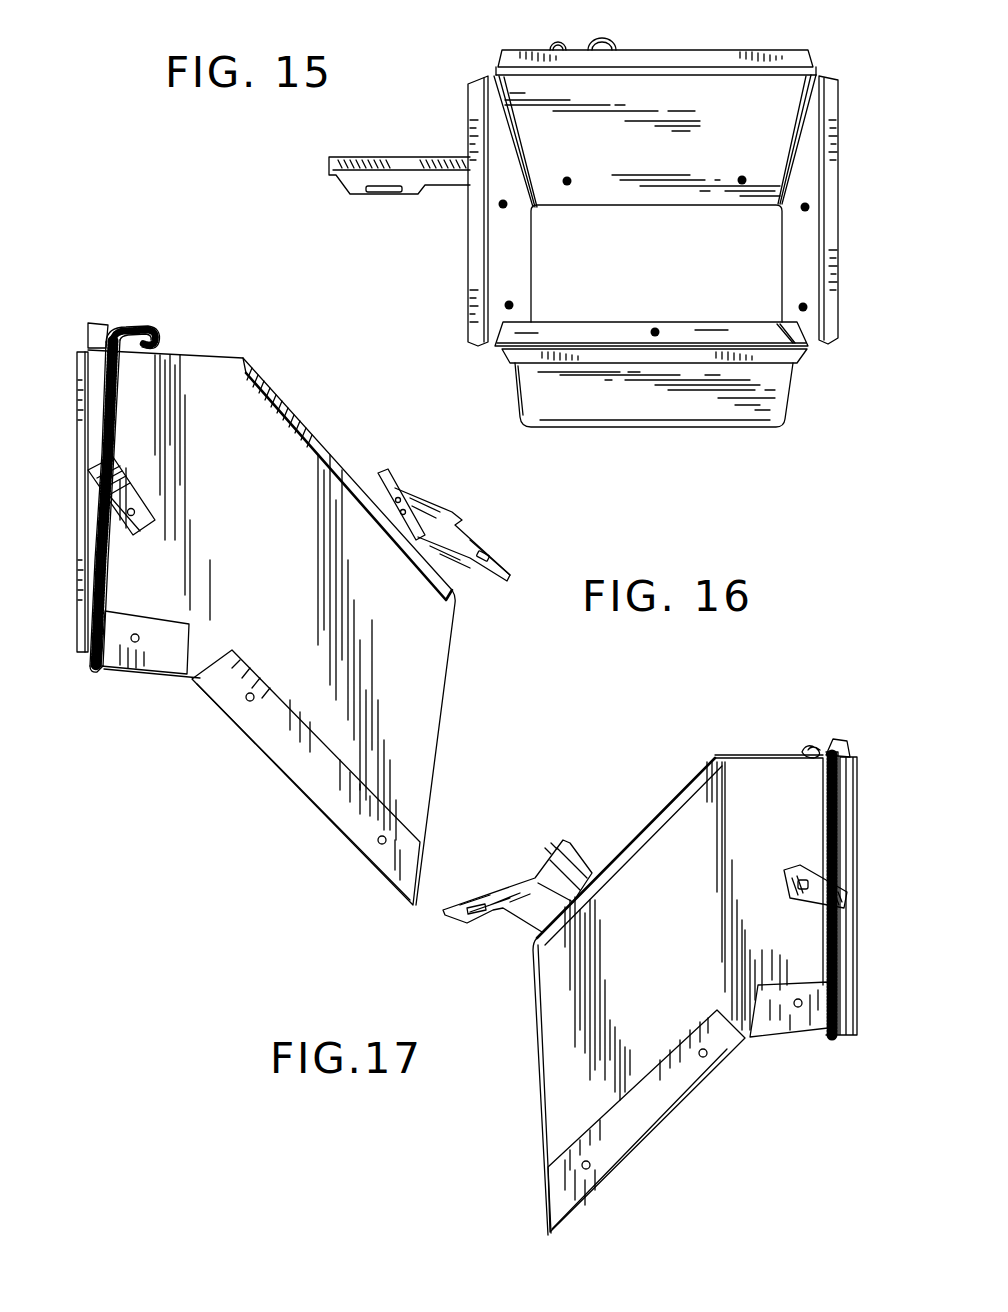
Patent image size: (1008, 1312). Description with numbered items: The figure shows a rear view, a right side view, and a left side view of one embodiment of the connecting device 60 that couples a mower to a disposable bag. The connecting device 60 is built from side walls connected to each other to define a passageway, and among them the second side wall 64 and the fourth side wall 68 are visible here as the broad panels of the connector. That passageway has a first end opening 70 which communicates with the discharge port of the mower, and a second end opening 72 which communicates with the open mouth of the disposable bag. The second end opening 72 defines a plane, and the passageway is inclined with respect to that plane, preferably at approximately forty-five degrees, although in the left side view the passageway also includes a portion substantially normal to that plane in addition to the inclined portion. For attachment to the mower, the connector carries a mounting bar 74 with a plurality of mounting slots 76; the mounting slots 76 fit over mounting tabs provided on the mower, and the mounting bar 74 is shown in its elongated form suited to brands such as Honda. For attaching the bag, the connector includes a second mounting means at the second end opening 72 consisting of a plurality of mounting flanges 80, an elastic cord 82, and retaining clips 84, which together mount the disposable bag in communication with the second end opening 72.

In FIG. 15, the connecting device 60 is at (433, 70).
In FIG. 16, the connecting device 60 is at (152, 760).
In FIG. 17, the connecting device 60 is at (743, 1158).
In FIG. 16, the second side wall 64 is at (438, 728).
In FIG. 17, the fourth side wall 68 is at (560, 998).
In FIG. 16, the first end opening 70 is at (460, 645).
In FIG. 17, the first end opening 70 is at (522, 1098).
In FIG. 15, the second end opening 72 is at (792, 347).
In FIG. 16, the second end opening 72 is at (62, 470).
In FIG. 17, the second end opening 72 is at (862, 782).
In FIG. 15, the mounting bar 74 is at (356, 156).
In FIG. 16, the mounting bar 74 is at (431, 517).
In FIG. 17, the mounting bar 74 is at (523, 895).
In FIG. 15, the mounting slots 76 is at (386, 193).
In FIG. 16, the mounting flanges 80 is at (104, 324).
In FIG. 16, the elastic cord 82 is at (112, 441).
In FIG. 16, the retaining clips 84 is at (150, 505).